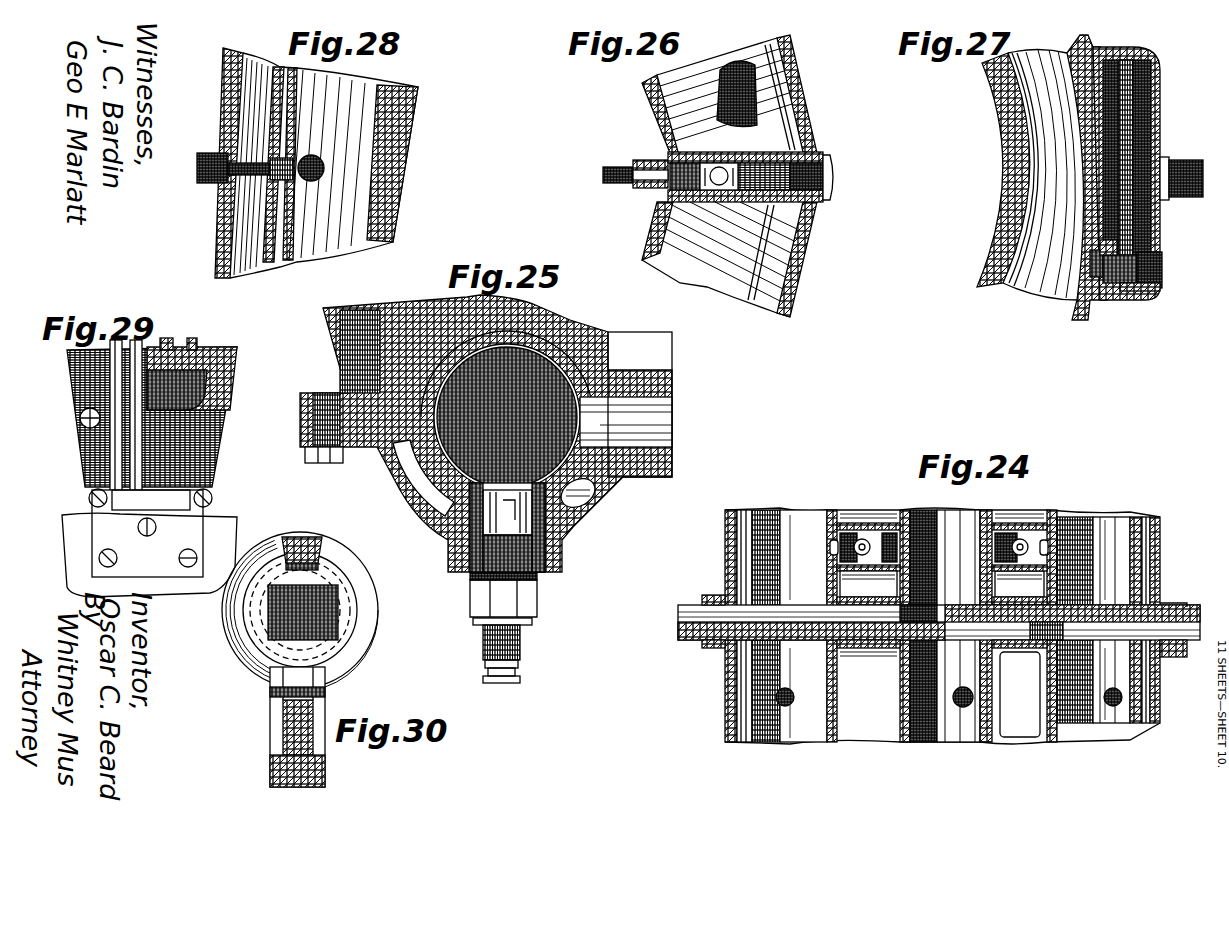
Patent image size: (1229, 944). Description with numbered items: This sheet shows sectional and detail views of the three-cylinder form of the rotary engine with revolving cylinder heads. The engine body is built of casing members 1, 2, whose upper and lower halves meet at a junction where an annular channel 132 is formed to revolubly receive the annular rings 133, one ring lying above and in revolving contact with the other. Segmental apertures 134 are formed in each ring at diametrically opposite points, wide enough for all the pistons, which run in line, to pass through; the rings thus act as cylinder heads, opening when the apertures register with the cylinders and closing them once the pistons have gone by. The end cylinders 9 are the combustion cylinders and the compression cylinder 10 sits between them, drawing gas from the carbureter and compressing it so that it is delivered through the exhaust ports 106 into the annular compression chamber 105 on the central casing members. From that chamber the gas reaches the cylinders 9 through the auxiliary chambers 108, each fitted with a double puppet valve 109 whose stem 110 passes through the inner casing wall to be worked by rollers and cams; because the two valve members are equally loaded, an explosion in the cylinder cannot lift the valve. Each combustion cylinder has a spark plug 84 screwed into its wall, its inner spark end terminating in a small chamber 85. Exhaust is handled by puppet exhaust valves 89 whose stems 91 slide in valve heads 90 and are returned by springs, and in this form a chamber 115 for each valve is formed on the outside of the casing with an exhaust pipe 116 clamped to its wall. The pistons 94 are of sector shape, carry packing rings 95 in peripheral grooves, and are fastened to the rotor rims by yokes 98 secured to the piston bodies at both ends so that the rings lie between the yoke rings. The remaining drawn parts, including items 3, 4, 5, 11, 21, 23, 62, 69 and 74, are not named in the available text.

In FIG. 27, the casing member 1 is at (1020, 210).
In FIG. 25, the casing member 1 is at (392, 474).
In FIG. 24, the casing member 1 is at (728, 570).
In FIG. 24, the casing member 2 is at (1170, 517).
In FIG. 26, the cylinder lining 3 is at (652, 118).
In FIG. 25, the cylinder lining 3 is at (350, 366).
In FIG. 24, the cylinder lining 3 is at (885, 512).
In FIG. 24, the partition 4 is at (1012, 510).
In FIG. 25, the bolt 5 is at (330, 465).
In FIG. 26, the combustion cylinder 9 is at (737, 94).
In FIG. 27, the combustion cylinder 9 is at (1042, 174).
In FIG. 25, the combustion cylinder 9 is at (507, 417).
In FIG. 24, the combustion cylinder 9 is at (949, 626).
In FIG. 24, the compression cylinder 10 is at (960, 708).
In FIG. 25, the opening 11 is at (585, 512).
In FIG. 24, the opening 11 is at (745, 514).
In FIG. 25, the passage 21 is at (603, 422).
In FIG. 25, the plate 23 is at (620, 479).
In FIG. 29, the plate 23 is at (158, 585).
In FIG. 26, the screw 62 is at (652, 158).
In FIG. 24, the screw 62 is at (830, 547).
In FIG. 26, the nut 69 is at (830, 197).
In FIG. 28, the knob 74 is at (315, 164).
In FIG. 25, the spark plug 84 is at (515, 596).
In FIG. 25, the spark chamber 85 is at (478, 505).
In FIG. 27, the exhaust valve 89 is at (1100, 305).
In FIG. 27, the valve head 90 is at (1160, 262).
In FIG. 27, the valve stem 91 is at (1150, 295).
In FIG. 29, the piston 94 is at (152, 416).
In FIG. 30, the piston 94 is at (303, 612).
In FIG. 29, the piston packing ring 95 is at (173, 338).
In FIG. 30, the piston packing ring 95 is at (318, 537).
In FIG. 29, the yoke 98 is at (130, 506).
In FIG. 30, the yoke 98 is at (372, 655).
In FIG. 28, the compression chamber 105 is at (240, 137).
In FIG. 27, the exhaust port 106 is at (1095, 262).
In FIG. 24, the exhaust port 106 is at (790, 700).
In FIG. 26, the auxiliary chamber 108 is at (728, 160).
In FIG. 24, the auxiliary chamber 108 is at (995, 547).
In FIG. 26, the double puppet valve 109 is at (712, 192).
In FIG. 24, the double puppet valve 109 is at (838, 533).
In FIG. 26, the valve stem 110 is at (662, 192).
In FIG. 27, the exhaust valve chamber 115 is at (1142, 118).
In FIG. 27, the exhaust pipe 116 is at (1195, 165).
In FIG. 24, the annular channel 132 is at (897, 656).
In FIG. 24, the annular ring 133 is at (975, 606).
In FIG. 24, the segmental aperture 134 is at (939, 626).